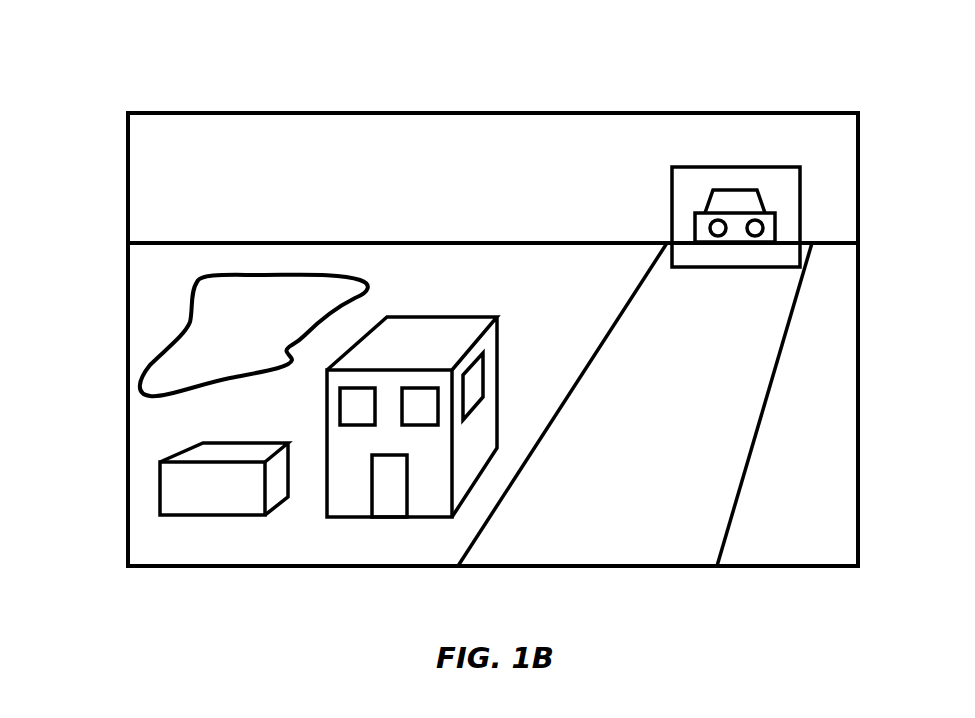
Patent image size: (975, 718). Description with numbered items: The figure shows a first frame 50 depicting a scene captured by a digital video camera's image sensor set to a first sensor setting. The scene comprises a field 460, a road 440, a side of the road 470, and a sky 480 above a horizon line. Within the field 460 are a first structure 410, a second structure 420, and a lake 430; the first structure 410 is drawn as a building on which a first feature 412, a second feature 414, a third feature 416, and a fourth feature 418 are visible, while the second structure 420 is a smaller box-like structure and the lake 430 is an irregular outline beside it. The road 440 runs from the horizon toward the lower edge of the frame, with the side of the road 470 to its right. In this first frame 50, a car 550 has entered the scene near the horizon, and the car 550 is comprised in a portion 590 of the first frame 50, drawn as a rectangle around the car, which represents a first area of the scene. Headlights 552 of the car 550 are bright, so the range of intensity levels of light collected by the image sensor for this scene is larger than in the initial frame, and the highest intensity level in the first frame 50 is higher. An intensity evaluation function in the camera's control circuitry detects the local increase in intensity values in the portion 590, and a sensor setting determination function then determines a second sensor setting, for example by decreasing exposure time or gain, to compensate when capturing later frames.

The first frame 50 is at (140, 75).
The first structure 410 is at (403, 353).
The first feature 412 is at (468, 383).
The second feature 414 is at (418, 410).
The third feature 416 is at (357, 413).
The fourth feature 418 is at (393, 512).
The second structure 420 is at (238, 502).
The lake 430 is at (272, 303).
The road 440 is at (713, 517).
The field 460 is at (180, 543).
The side of the road 470 is at (835, 517).
The sky 480 is at (818, 165).
The car 550 is at (735, 200).
The headlights 552 is at (780, 224).
The portion 590 is at (743, 163).